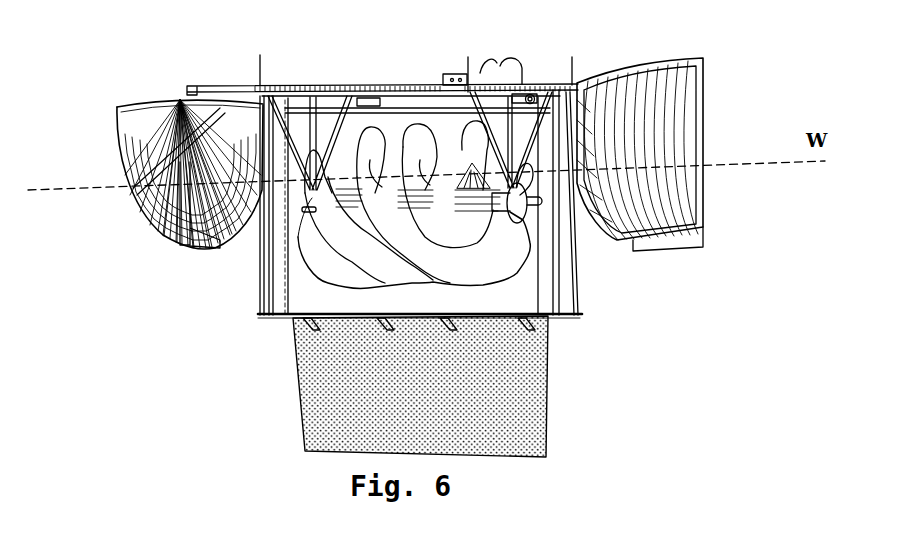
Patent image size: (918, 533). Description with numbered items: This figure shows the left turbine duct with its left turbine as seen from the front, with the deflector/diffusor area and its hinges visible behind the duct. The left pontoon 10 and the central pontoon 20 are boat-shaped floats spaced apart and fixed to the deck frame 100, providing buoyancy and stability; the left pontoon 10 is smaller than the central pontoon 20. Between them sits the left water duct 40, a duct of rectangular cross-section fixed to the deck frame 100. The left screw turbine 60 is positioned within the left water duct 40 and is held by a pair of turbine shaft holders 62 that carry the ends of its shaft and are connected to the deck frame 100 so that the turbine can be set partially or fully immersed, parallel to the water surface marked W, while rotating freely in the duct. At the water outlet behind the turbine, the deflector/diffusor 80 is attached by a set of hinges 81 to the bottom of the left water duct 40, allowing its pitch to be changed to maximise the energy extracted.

The left pontoon 10 is at (161, 205).
The central pontoon 20 is at (672, 184).
The left water duct 40 is at (568, 257).
The left screw turbine 60 is at (334, 266).
The turbine shaft holders 62 is at (335, 125).
The deflector/diffusor 80 is at (527, 377).
The hinges 81 is at (300, 316).
The deck frame 100 is at (451, 73).